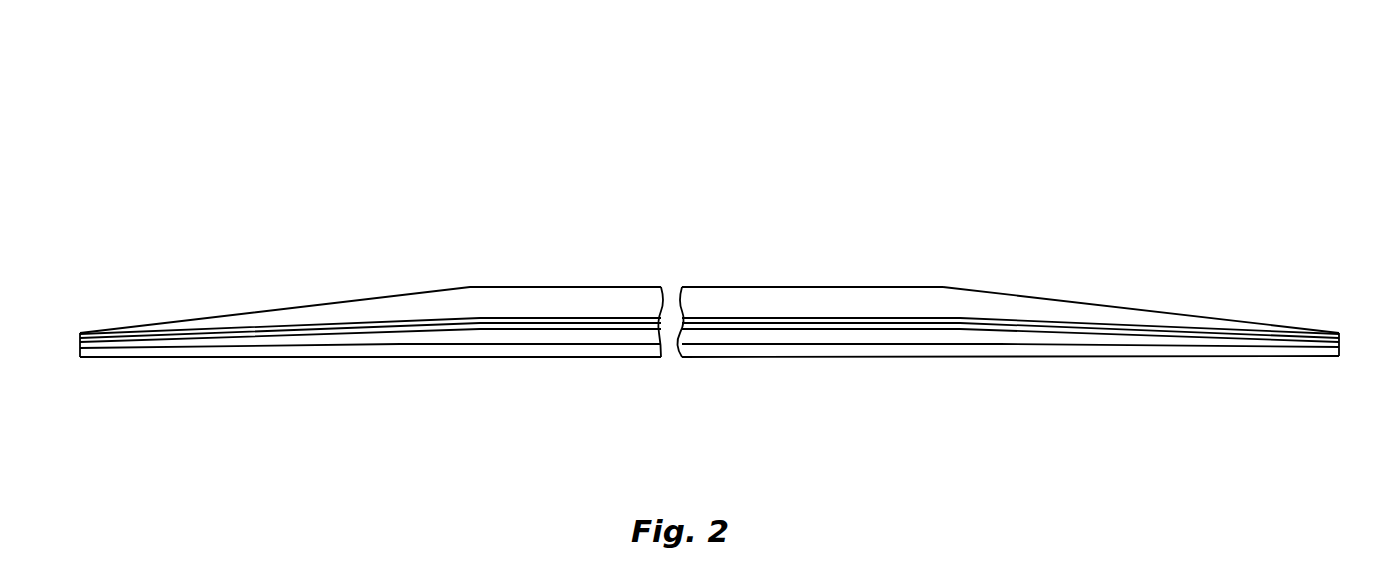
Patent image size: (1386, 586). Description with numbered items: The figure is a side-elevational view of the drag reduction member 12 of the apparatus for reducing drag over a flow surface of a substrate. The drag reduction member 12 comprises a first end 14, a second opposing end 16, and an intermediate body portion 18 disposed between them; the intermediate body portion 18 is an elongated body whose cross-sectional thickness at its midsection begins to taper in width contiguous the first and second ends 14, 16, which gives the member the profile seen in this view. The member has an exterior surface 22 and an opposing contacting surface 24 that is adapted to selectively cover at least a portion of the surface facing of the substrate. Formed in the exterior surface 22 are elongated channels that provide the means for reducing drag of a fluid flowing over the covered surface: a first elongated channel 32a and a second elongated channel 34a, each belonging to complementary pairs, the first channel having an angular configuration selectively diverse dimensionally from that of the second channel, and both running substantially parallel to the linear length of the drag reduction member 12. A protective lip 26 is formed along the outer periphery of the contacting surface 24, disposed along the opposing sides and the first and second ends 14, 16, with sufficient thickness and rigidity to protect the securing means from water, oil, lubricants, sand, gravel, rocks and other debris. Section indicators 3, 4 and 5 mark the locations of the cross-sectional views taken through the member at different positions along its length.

The drag reduction member 12 is at (626, 148).
The first end 14 is at (1339, 333).
The second opposing end 16 is at (80, 333).
The intermediate body portion 18 is at (613, 312).
The exterior surface 22 is at (1020, 295).
The contacting surface 24 is at (1171, 345).
The protective lip 26 is at (1022, 357).
The first elongated channel 32a is at (523, 330).
The second elongated channel 34a is at (507, 318).
The section line 3- 3 is at (783, 275).
The section line 4- 4 is at (363, 275).
The section line 5- 5 is at (139, 275).